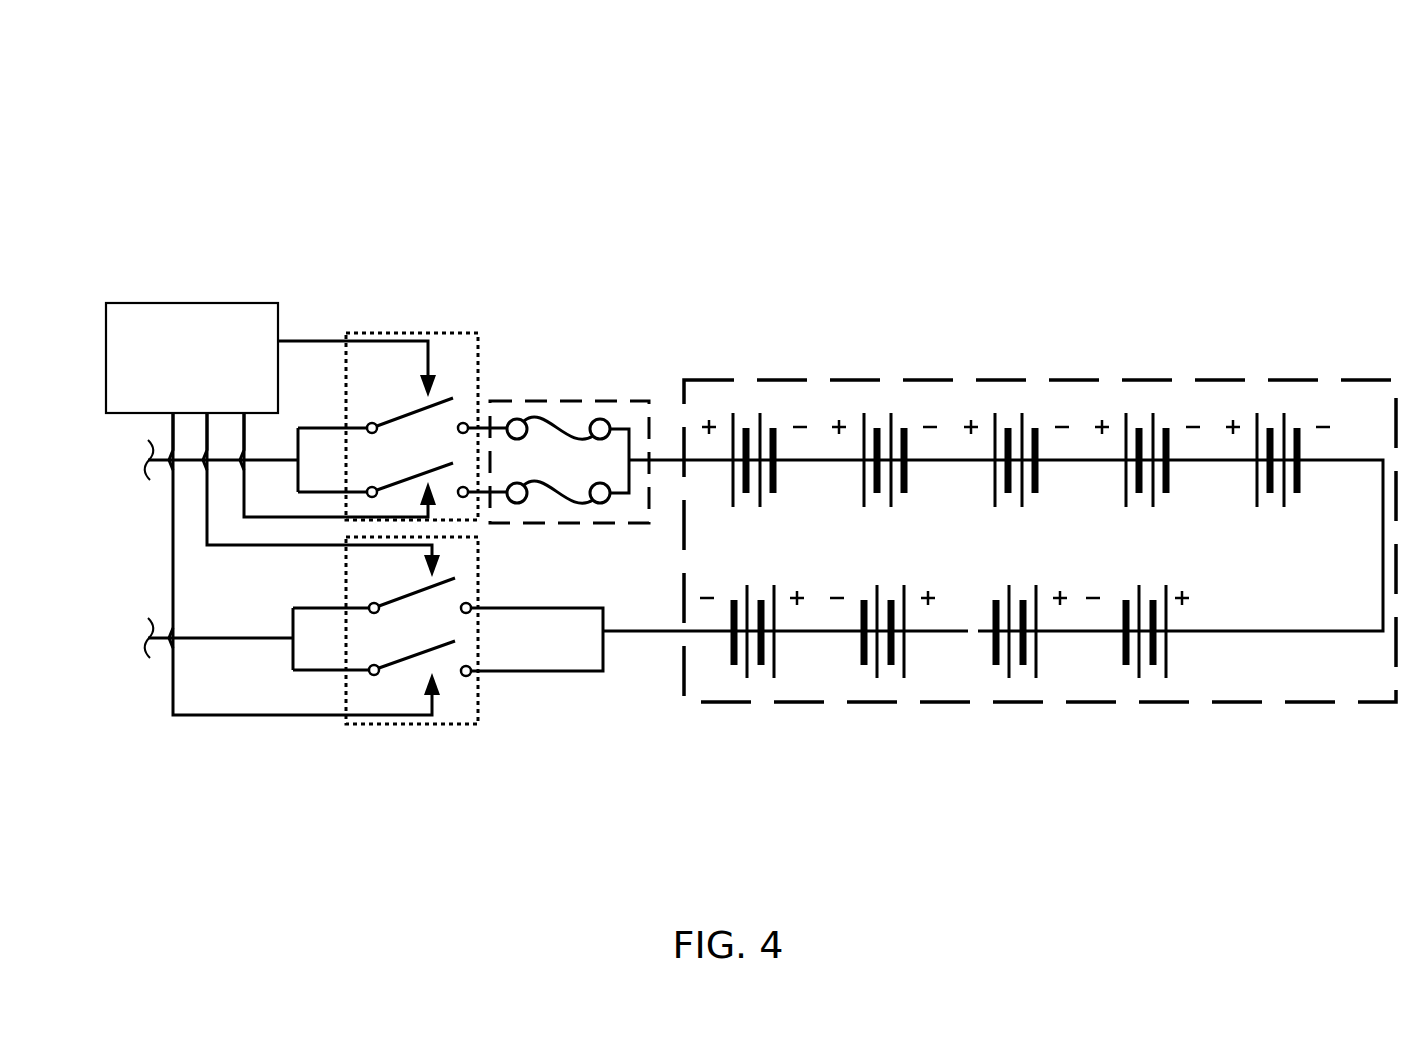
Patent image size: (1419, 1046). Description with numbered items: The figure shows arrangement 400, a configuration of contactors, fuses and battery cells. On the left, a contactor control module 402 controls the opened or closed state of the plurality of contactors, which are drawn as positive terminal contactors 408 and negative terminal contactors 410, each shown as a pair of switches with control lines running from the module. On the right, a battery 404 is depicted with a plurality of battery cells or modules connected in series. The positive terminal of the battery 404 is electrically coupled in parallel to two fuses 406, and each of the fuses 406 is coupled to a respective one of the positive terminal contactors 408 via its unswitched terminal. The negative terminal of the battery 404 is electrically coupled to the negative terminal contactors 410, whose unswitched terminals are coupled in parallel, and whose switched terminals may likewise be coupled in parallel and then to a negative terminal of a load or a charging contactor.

The arrangement 400 is at (730, 67).
The contactor control module 402 is at (158, 302).
The battery 404 is at (747, 380).
The fuses 406 is at (553, 400).
The positive terminal contactors 408 is at (448, 333).
The negative terminal contactors 410 is at (466, 727).